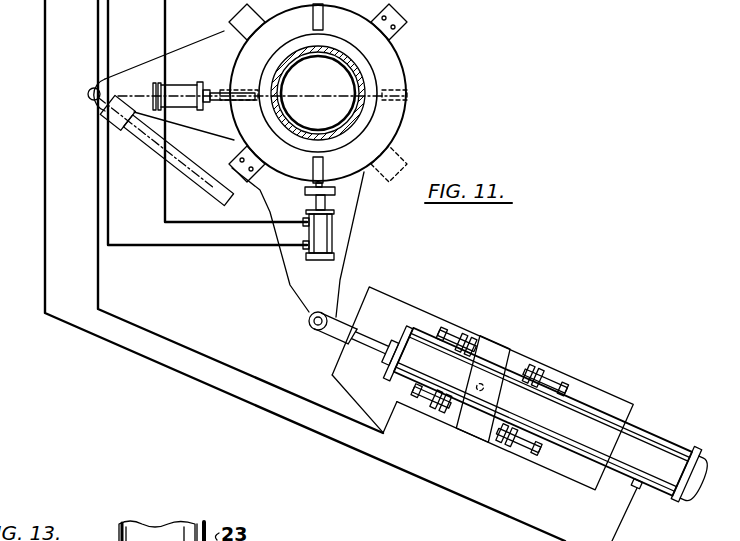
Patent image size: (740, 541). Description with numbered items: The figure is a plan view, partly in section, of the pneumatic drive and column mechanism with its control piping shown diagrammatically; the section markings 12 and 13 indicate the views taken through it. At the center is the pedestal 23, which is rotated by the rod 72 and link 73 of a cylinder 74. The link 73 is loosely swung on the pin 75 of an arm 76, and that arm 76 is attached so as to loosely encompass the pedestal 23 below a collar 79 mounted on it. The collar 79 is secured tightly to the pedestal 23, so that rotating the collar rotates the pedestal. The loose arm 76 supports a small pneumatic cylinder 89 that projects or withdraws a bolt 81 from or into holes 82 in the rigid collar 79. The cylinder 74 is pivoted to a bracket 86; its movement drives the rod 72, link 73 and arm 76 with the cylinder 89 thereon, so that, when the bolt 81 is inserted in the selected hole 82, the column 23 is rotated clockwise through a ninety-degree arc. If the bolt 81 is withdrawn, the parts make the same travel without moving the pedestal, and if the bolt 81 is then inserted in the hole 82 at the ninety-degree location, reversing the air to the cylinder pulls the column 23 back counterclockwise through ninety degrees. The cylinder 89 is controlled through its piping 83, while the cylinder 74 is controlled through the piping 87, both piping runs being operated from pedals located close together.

The section arrow / view indicator 12 is at (320, 260).
The section line 13 is at (327, 362).
The central pedestal 23 is at (363, 123).
The rod 72 is at (366, 334).
The link 73 is at (141, 108).
The cylinder 74 is at (645, 452).
The pin 75 is at (309, 321).
The arm 76 is at (292, 265).
The collar 79 is at (373, 77).
The bolt 81 is at (220, 88).
The holes 82 is at (245, 90).
The piping 83 is at (160, 183).
The bracket 86 is at (495, 352).
The piping 87 is at (92, 166).
The pneumatic cylinder 89 is at (207, 82).